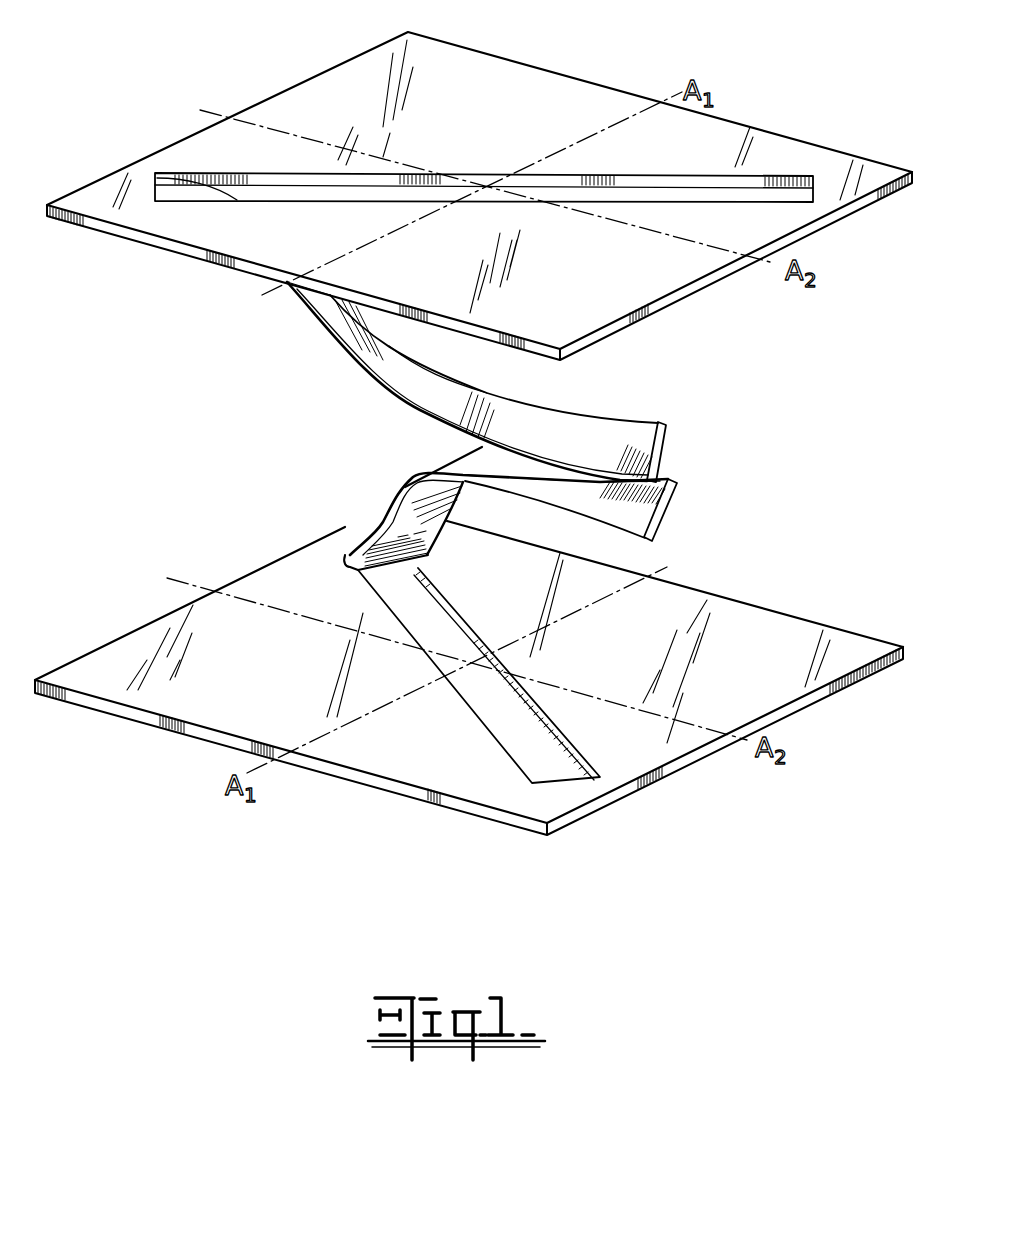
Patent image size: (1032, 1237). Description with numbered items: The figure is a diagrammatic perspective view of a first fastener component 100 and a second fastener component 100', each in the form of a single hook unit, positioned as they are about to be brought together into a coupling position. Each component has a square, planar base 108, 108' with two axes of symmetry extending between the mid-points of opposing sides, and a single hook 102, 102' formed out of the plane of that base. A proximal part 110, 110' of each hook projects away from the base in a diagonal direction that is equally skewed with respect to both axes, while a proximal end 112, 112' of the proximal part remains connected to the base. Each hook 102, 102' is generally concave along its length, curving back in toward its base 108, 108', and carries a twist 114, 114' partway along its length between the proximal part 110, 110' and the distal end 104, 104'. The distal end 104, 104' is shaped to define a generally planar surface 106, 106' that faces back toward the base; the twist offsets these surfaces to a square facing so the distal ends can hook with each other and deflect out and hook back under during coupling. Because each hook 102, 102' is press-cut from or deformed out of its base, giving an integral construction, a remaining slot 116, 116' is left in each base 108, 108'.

The first fastener component 100 is at (479, 194).
The second fastener component 100' is at (469, 641).
The hook 102 is at (450, 381).
The hook 102' is at (485, 505).
The distal end 104 is at (676, 409).
The distal end 104' is at (694, 457).
The planar surface 106 is at (703, 439).
The planar surface 106' is at (687, 515).
The base 108 is at (488, 159).
The base 108' is at (470, 668).
The proximal part 110 is at (256, 308).
The proximal part 110' is at (323, 502).
The proximal end 112 is at (195, 117).
The proximal end 112' is at (263, 549).
The twist 114 is at (447, 367).
The twist 114' is at (511, 500).
The slot 116 is at (484, 245).
The slot 116' is at (440, 698).